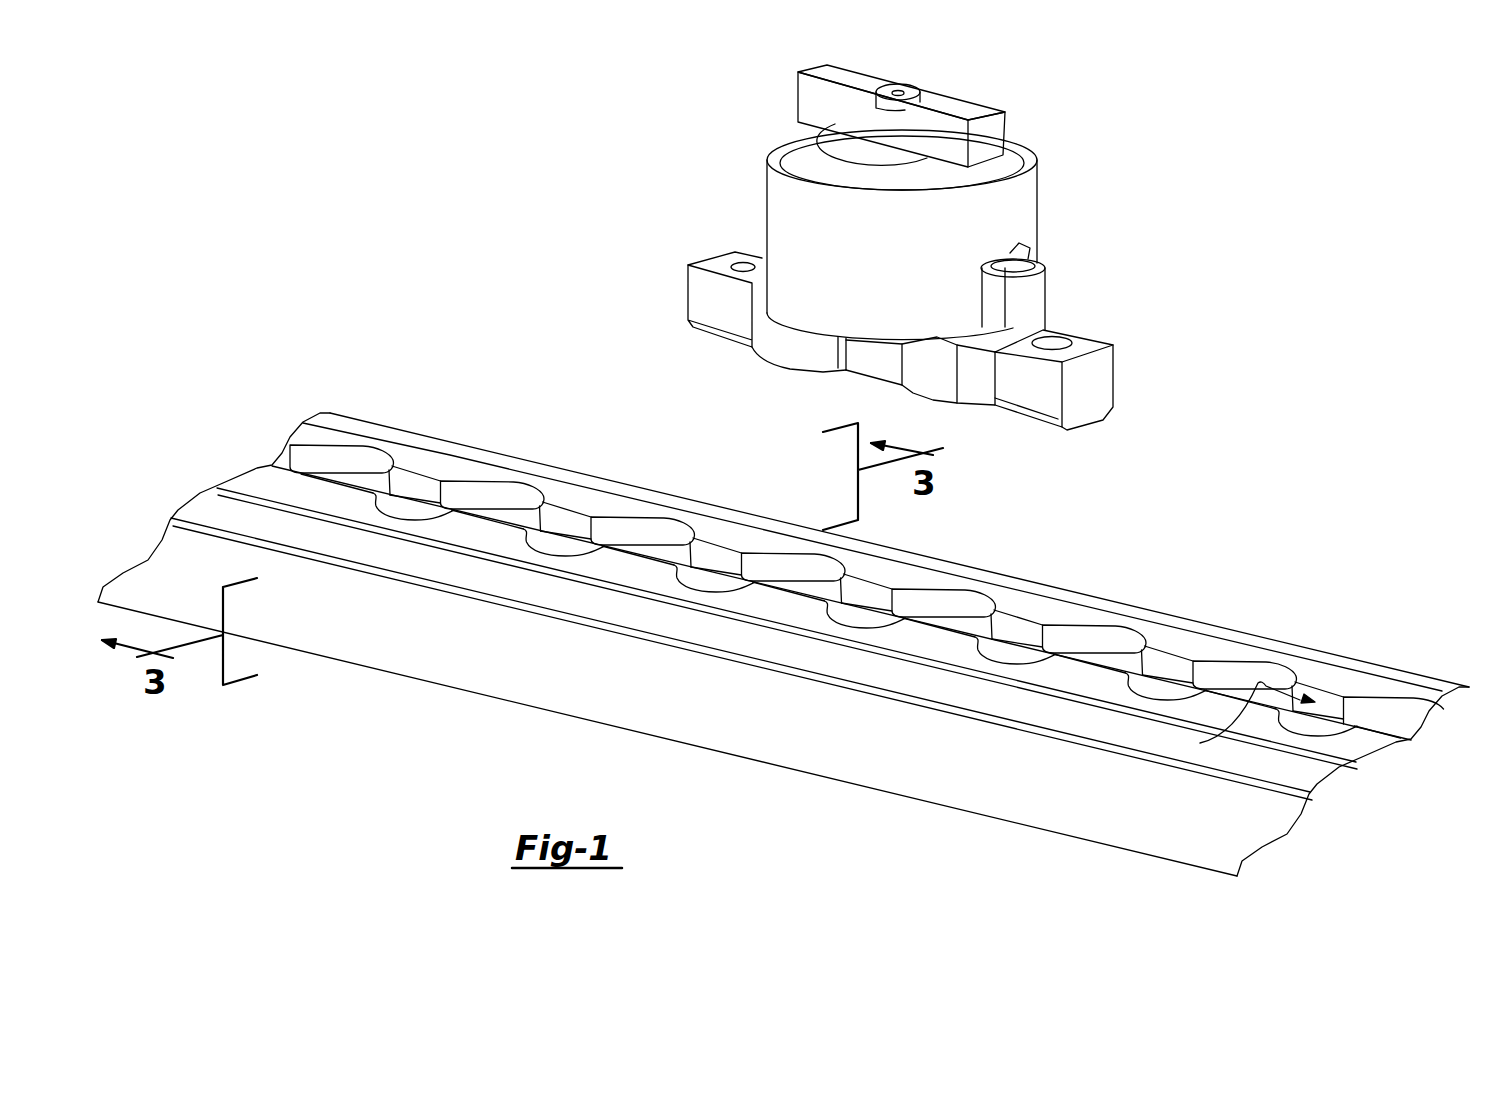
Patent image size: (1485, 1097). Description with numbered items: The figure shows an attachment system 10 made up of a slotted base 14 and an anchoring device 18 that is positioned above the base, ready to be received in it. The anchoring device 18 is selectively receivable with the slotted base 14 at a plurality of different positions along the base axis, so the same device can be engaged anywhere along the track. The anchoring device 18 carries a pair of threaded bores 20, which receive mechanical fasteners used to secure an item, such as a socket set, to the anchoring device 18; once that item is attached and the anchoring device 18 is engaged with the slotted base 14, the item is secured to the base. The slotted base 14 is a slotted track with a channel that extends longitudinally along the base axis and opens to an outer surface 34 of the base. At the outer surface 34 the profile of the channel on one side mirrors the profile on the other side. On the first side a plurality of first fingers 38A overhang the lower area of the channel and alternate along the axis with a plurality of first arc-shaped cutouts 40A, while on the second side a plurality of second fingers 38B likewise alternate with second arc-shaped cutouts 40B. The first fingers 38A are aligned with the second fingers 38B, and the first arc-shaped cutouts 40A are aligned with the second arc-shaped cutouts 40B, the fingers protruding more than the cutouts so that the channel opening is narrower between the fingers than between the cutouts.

The attachment system 10 is at (1243, 233).
The slotted base 14 is at (1012, 583).
The anchoring device 18 is at (950, 96).
The threaded bores 20 is at (744, 258).
The outer surface 34 is at (1147, 630).
The first fingers 38A is at (955, 640).
The second fingers 38B is at (1020, 628).
The first arc-shaped cutouts 40A is at (565, 540).
The second arc-shaped cutouts 40B is at (950, 603).